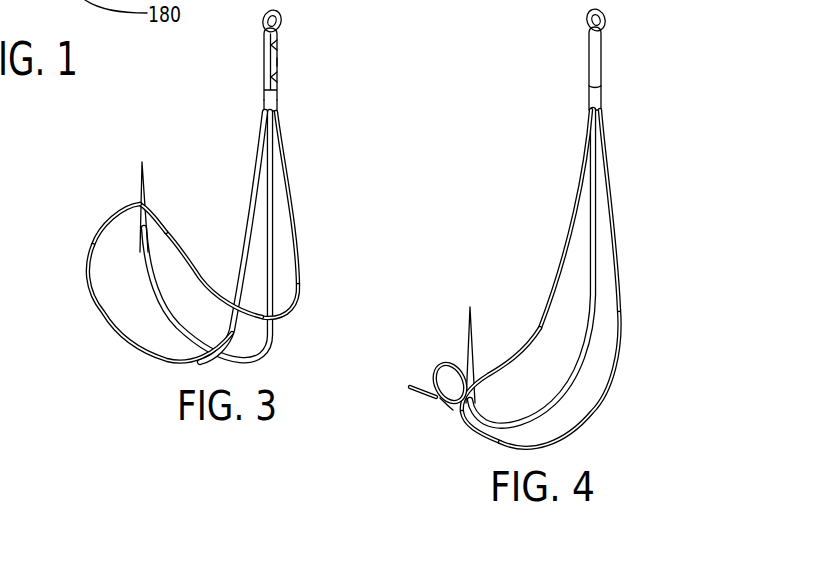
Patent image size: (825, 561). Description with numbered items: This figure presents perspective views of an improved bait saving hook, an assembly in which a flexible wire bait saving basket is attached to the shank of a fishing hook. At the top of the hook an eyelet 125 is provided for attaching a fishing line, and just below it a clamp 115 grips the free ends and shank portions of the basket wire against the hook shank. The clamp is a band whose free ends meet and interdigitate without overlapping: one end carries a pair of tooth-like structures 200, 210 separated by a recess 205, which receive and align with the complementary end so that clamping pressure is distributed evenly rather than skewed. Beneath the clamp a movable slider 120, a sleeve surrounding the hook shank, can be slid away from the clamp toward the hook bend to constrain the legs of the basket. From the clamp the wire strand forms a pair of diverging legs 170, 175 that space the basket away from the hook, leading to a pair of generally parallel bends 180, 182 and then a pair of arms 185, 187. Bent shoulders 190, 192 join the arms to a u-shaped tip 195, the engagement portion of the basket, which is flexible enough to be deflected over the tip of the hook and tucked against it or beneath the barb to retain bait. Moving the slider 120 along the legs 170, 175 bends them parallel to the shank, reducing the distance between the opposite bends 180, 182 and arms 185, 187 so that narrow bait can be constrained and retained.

In FIG. 3, the clamp 115 is at (265, 68).
In FIG. 4, the clamp 115 is at (588, 60).
In FIG. 3, the movable slider 120 is at (265, 100).
In FIG. 4, the movable slider 120 is at (588, 97).
In FIG. 3, the eyelet 125 is at (260, 21).
In FIG. 4, the eyelet 125 is at (588, 15).
In FIG. 3, the diverging leg 170 is at (252, 198).
In FIG. 4, the diverging leg 170 is at (609, 222).
In FIG. 3, the diverging leg 175 is at (288, 190).
In FIG. 4, the diverging leg 175 is at (573, 212).
In FIG. 3, the bend 180 is at (180, 365).
In FIG. 4, the bend 180 is at (542, 328).
In FIG. 3, the bend 182 is at (288, 320).
In FIG. 4, the bend 182 is at (610, 388).
In FIG. 3, the arm 185 is at (123, 333).
In FIG. 4, the arm 185 is at (490, 440).
In FIG. 3, the arm 187 is at (208, 280).
In FIG. 3, the bent shoulder 190 is at (92, 247).
In FIG. 4, the bent shoulder 190 is at (453, 410).
In FIG. 3, the bent shoulder 192 is at (162, 222).
In FIG. 4, the bent shoulder 192 is at (417, 390).
In FIG. 3, the u-shaped tip 195 is at (125, 212).
In FIG. 4, the u-shaped tip 195 is at (456, 362).
In FIG. 3, the tooth-like structure 200 is at (277, 45).
In FIG. 3, the recess 205 is at (277, 62).
In FIG. 3, the tooth-like structure 210 is at (277, 81).